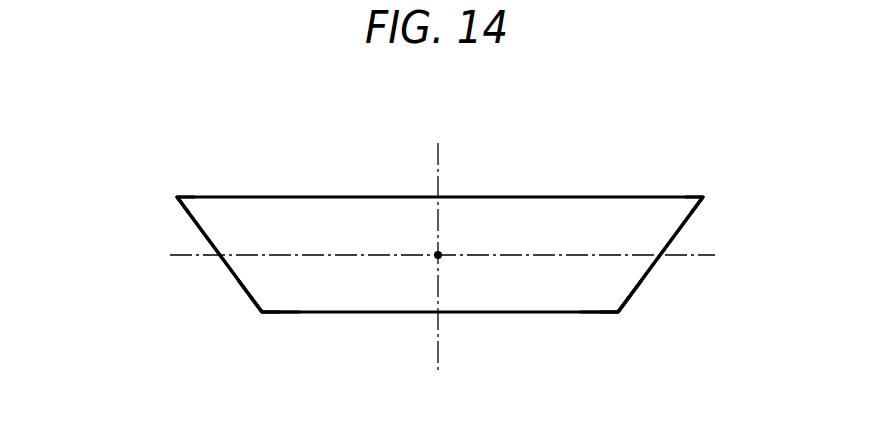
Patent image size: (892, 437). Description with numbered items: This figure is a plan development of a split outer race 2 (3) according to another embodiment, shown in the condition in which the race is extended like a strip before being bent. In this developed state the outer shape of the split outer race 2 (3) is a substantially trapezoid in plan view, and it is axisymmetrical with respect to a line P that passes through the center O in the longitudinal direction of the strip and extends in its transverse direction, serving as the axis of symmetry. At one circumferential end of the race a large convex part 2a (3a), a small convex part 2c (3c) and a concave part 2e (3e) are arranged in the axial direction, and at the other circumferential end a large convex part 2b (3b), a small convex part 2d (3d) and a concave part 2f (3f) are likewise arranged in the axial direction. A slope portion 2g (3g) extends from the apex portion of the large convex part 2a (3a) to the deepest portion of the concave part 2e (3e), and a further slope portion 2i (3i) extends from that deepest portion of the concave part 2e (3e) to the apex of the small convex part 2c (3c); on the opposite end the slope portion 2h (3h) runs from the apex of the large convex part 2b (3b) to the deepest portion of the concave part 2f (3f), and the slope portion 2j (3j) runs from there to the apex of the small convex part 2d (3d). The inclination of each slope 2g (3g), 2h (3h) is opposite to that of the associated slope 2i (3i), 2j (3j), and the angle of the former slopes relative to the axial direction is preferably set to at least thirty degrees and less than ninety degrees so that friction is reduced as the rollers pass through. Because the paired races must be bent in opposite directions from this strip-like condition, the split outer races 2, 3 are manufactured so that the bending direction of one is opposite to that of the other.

The split outer race 2 is at (443, 258).
The split outer race 3 is at (565, 162).
The large convex part 2a is at (137, 202).
The large convex part 3a is at (178, 205).
The large convex part 2b is at (746, 186).
The large convex part 3b is at (706, 206).
The small convex part 2c is at (268, 331).
The small convex part 3c is at (257, 315).
The small convex part 2d is at (634, 343).
The small convex part 3d is at (622, 313).
The concave part 2e is at (187, 321).
The concave part 3e is at (235, 296).
The concave part 2f is at (689, 296).
The concave part 3f is at (641, 298).
The slope portion 2g is at (181, 254).
The slope portion 3g is at (222, 257).
The slope portion 2h is at (701, 254).
The slope portion 3h is at (652, 265).
The slope portion 2i is at (227, 359).
The slope portion 3i is at (260, 309).
The slope portion 2j is at (666, 330).
The slope portion 3j is at (622, 313).
The line P (axis of symmetry) P is at (440, 172).
The center O is at (443, 258).